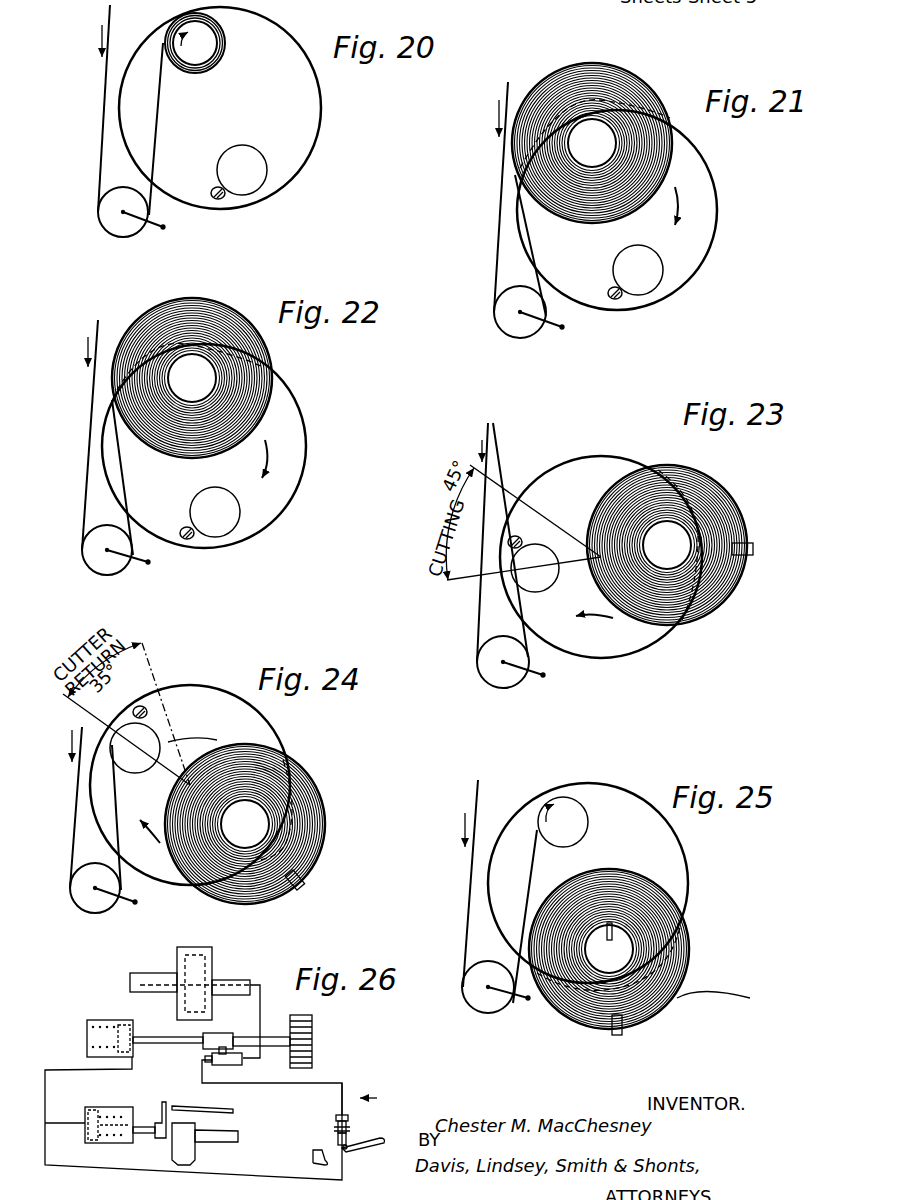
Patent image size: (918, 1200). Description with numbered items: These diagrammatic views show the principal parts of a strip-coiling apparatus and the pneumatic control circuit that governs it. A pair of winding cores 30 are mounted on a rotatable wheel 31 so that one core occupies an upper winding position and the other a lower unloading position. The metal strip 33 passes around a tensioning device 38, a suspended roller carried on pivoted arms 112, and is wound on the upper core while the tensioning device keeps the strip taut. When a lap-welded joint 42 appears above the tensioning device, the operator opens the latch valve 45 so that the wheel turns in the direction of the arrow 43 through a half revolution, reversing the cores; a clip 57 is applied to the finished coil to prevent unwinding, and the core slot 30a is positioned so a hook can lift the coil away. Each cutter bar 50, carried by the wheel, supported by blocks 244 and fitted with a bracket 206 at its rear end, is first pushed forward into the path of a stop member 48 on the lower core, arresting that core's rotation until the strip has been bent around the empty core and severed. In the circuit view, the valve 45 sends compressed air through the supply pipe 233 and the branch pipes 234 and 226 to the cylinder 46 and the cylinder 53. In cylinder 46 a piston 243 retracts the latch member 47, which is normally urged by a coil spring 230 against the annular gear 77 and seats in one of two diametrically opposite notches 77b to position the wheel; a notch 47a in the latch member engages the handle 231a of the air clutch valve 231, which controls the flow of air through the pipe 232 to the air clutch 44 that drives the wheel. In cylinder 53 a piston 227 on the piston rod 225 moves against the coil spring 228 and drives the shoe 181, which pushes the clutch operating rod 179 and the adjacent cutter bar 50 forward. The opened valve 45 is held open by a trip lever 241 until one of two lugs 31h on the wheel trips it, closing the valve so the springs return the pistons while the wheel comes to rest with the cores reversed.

In FIG. 20, the winding core 30 is at (222, 43).
In FIG. 21, the winding core 30 is at (608, 122).
In FIG. 22, the winding core 30 is at (195, 352).
In FIG. 23, the winding core 30 is at (683, 523).
In FIG. 24, the winding core 30 is at (260, 803).
In FIG. 25, the winding core 30 is at (580, 803).
In FIG. 25, the core slot 30a is at (615, 930).
In FIG. 20, the wheel 31 is at (321, 97).
In FIG. 21, the wheel 31 is at (717, 222).
In FIG. 22, the wheel 31 is at (307, 455).
In FIG. 23, the wheel 31 is at (643, 652).
In FIG. 24, the wheel 31 is at (281, 731).
In FIG. 25, the wheel 31 is at (684, 851).
In FIG. 20, the metal strip 33 is at (101, 148).
In FIG. 22, the metal strip 33 is at (85, 492).
In FIG. 24, the metal strip 33 is at (72, 833).
In FIG. 25, the metal strip 33 is at (470, 905).
In FIG. 20, the tensioning device 38 is at (110, 227).
In FIG. 21, the tensioning device 38 is at (522, 330).
In FIG. 22, the tensioning device 38 is at (97, 562).
In FIG. 23, the tensioning device 38 is at (498, 673).
In FIG. 24, the tensioning device 38 is at (88, 903).
In FIG. 25, the tensioning device 38 is at (493, 1005).
In FIG. 21, the lap-welded joint 42 is at (523, 223).
In FIG. 23, the lap-welded joint 42 is at (558, 515).
In FIG. 24, the lap-welded joint 42 is at (214, 737).
In FIG. 25, the lap-welded joint 42 is at (697, 995).
In FIG. 23, the arrow 43 is at (630, 440).
In FIG. 20, the stop member 48 is at (262, 147).
In FIG. 22, the stop member 48 is at (198, 538).
In FIG. 20, the cutter bar 50 is at (220, 200).
In FIG. 21, the cutter bar 50 is at (615, 300).
In FIG. 22, the cutter bar 50 is at (187, 540).
In FIG. 24, the cutter bar 50 is at (147, 708).
In FIG. 26, the cutter bar 50 is at (227, 1130).
In FIG. 23, the clip 57 is at (753, 546).
In FIG. 24, the clip 57 is at (304, 882).
In FIG. 25, the clip 57 is at (625, 1037).
In FIG. 20, the arms 112 is at (147, 238).
In FIG. 26, the air clutch 44 is at (222, 947).
In FIG. 26, the cylinder 46 is at (88, 1020).
In FIG. 26, the piston 243 is at (125, 1020).
In FIG. 26, the coil spring 230 is at (88, 1043).
In FIG. 26, the supporting blocks 244 is at (175, 1037).
In FIG. 26, the notch 47a is at (230, 1028).
In FIG. 26, the latch member 47 is at (263, 1037).
In FIG. 26, the annular gear 77 is at (312, 1022).
In FIG. 26, the notches 77b is at (312, 1045).
In FIG. 26, the handle 231a is at (215, 1052).
In FIG. 26, the air clutch valve 231 is at (230, 1065).
In FIG. 26, the pipe 232 is at (240, 1087).
In FIG. 26, the branch pipe 234 is at (45, 1075).
In FIG. 26, the pipe 226 is at (63, 1121).
In FIG. 26, the cylinder 53 is at (85, 1140).
In FIG. 26, the piston 227 is at (95, 1107).
In FIG. 26, the coil spring 228 is at (100, 1143).
In FIG. 26, the piston rod 225 is at (145, 1135).
In FIG. 26, the shoe 181 is at (162, 1102).
In FIG. 26, the clutch operating rod 179 is at (187, 1105).
In FIG. 26, the bracket 206 is at (195, 1148).
In FIG. 26, the air supply pipe 233 is at (217, 1172).
In FIG. 26, the trip lever 241 is at (301, 1161).
In FIG. 26, the lugs 31h is at (316, 1145).
In FIG. 26, the latch valve 45 is at (363, 1144).